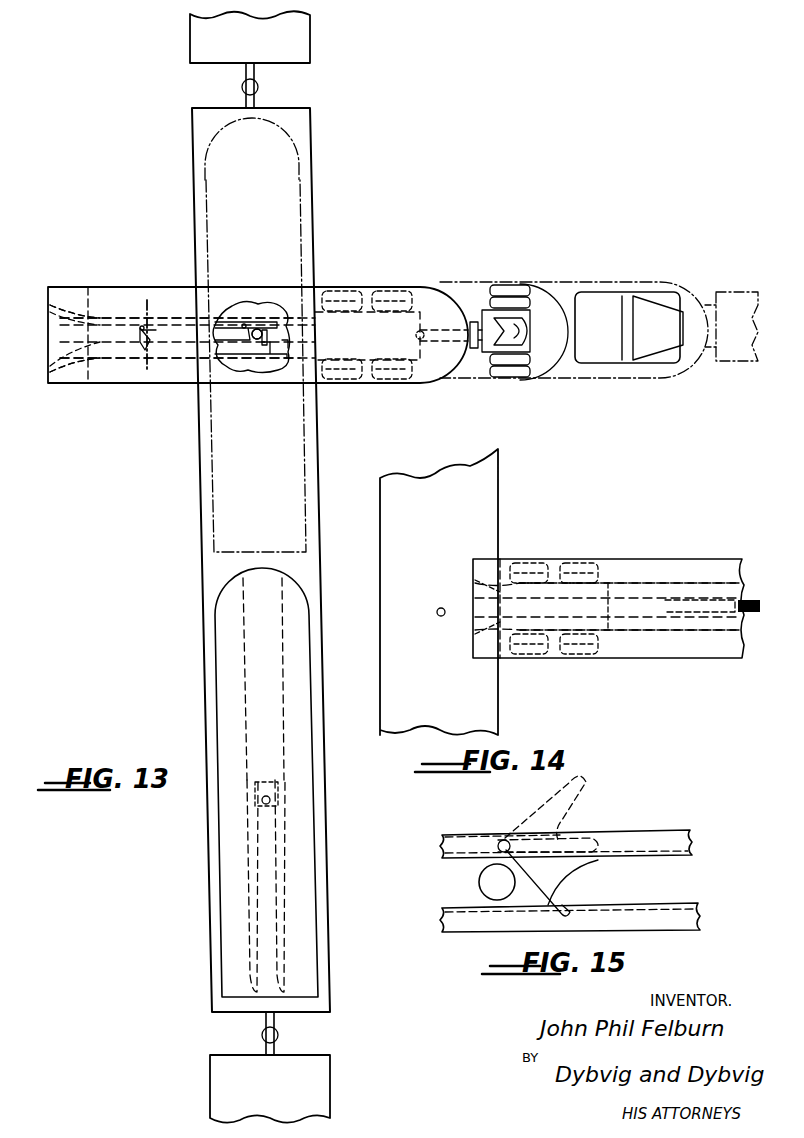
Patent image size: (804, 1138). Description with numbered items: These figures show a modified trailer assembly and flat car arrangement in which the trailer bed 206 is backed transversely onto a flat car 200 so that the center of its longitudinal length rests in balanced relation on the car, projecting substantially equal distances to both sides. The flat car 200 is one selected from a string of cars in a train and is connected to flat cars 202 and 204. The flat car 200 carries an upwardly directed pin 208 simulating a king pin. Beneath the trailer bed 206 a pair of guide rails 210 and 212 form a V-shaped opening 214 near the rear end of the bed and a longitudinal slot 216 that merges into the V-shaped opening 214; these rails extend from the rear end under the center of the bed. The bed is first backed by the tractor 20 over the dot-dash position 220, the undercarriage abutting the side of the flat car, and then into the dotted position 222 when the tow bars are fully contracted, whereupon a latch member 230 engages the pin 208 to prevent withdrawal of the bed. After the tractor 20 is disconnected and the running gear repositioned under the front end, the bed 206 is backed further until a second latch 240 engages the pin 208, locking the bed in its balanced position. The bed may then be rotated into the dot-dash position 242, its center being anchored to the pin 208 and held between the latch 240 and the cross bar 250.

In FIG. 13, the tractor 20 is at (605, 355).
In FIG. 13, the flat car 200 is at (313, 553).
In FIG. 14, the flat car 200 is at (490, 494).
In FIG. 13, the flat car 202 is at (305, 34).
In FIG. 13, the flat car 204 is at (322, 1076).
In FIG. 13, the trailer bed 206 is at (432, 278).
In FIG. 14, the trailer bed 206 is at (668, 568).
In FIG. 14, the pin 208 is at (441, 608).
In FIG. 15, the pin 208 is at (492, 882).
In FIG. 13, the guide rail 210 is at (104, 322).
In FIG. 14, the guide rail 210 is at (616, 596).
In FIG. 15, the guide rail 210 is at (658, 838).
In FIG. 13, the guide rail 212 is at (104, 352).
In FIG. 14, the guide rail 212 is at (616, 620).
In FIG. 15, the guide rail 212 is at (685, 922).
In FIG. 13, the V-shaped opening 214 is at (62, 338).
In FIG. 13, the longitudinal slot 216 is at (173, 335).
In FIG. 13, the position 220 is at (668, 278).
In FIG. 13, the position 222 is at (546, 292).
In FIG. 13, the latch member 230 is at (143, 355).
In FIG. 15, the latch member 230 is at (552, 870).
In FIG. 13, the second latch 240 is at (255, 345).
In FIG. 13, the dot-dash position 242 is at (312, 438).
In FIG. 13, the cross bar 250 is at (280, 360).